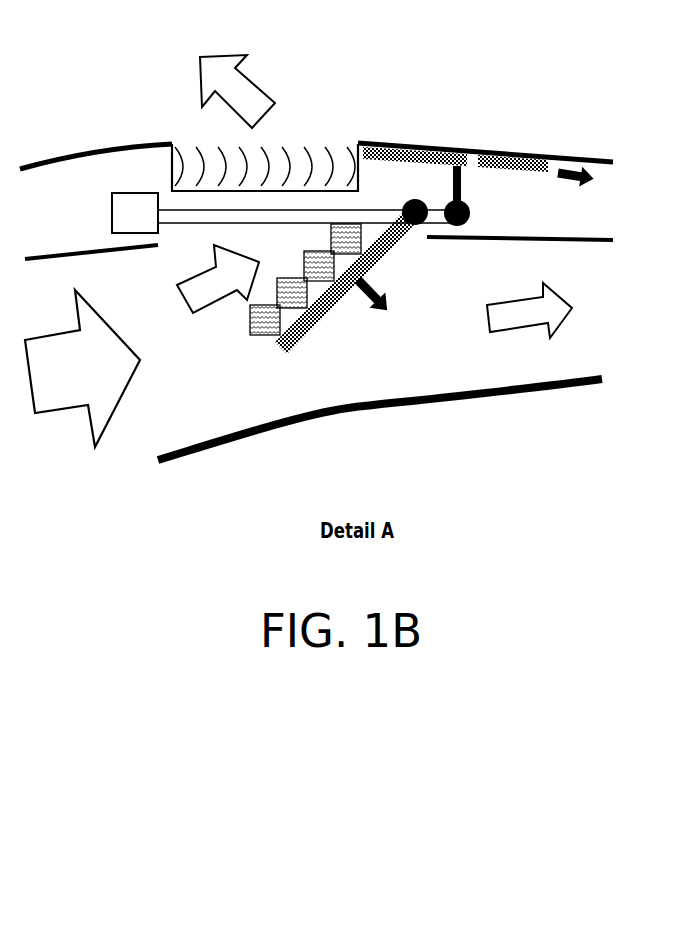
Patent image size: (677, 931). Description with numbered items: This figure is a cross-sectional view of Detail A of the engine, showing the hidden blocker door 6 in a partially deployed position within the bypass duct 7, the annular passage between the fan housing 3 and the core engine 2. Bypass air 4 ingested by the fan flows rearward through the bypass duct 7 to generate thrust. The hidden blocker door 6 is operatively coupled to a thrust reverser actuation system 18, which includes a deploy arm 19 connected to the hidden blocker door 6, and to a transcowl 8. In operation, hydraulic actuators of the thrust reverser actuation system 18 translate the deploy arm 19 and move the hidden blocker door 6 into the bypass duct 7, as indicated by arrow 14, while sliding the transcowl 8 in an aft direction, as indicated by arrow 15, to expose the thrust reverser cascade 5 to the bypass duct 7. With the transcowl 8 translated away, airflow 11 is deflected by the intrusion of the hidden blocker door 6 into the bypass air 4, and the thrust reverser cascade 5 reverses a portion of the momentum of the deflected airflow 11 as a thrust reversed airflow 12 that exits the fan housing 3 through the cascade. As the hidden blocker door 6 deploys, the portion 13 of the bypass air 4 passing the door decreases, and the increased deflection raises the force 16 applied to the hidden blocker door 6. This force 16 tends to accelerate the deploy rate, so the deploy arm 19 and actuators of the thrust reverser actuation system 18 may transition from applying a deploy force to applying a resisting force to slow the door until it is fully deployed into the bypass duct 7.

The core engine 2 is at (349, 454).
The fan housing 3 is at (44, 221).
The bypass air 4 is at (61, 385).
The thrust reverser cascade 5 is at (210, 145).
The hidden blocker door 6 is at (323, 324).
The bypass duct 7 is at (155, 417).
The transcowl 8 is at (470, 153).
The deflected airflow 11 is at (218, 279).
The thrust reversed airflow 12 is at (237, 91).
The portion of the bypass air 13 is at (529, 310).
The arrow indicating blocker door deploy motion 14 is at (385, 309).
The arrow indicating transcowl aft motion 15 is at (589, 186).
The force on the hidden blocker door 16 is at (259, 334).
The thrust reverser actuation system 18 is at (122, 227).
The deploy arm 19 is at (366, 207).